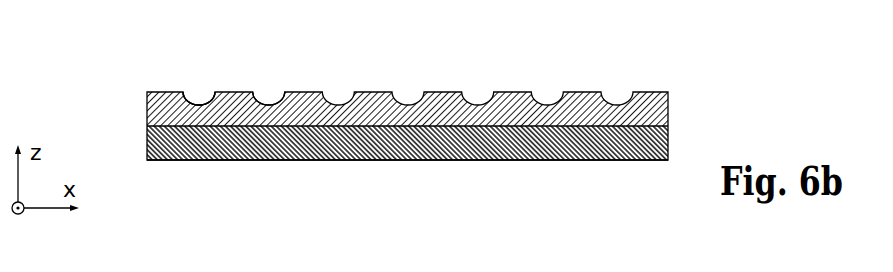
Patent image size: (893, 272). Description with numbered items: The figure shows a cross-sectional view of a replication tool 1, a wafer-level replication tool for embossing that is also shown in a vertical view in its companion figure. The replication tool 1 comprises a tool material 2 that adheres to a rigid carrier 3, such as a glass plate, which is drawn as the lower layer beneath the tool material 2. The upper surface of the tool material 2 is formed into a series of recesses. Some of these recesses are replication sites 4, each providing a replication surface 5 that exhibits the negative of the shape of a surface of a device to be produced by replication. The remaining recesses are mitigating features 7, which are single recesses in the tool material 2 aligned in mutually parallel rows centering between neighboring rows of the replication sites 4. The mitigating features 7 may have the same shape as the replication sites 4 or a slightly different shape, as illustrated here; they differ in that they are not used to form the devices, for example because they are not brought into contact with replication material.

The replication tool 1 is at (101, 122).
The tool material 2 is at (492, 118).
The rigid carrier 3 is at (367, 142).
The replication site 4 is at (188, 97).
The replication surface 5 is at (199, 98).
The mitigating feature 7 is at (258, 100).